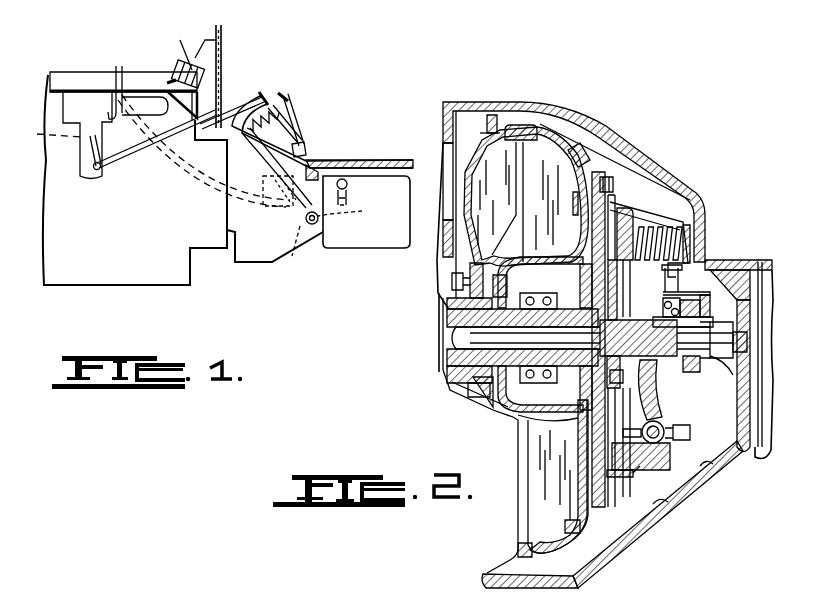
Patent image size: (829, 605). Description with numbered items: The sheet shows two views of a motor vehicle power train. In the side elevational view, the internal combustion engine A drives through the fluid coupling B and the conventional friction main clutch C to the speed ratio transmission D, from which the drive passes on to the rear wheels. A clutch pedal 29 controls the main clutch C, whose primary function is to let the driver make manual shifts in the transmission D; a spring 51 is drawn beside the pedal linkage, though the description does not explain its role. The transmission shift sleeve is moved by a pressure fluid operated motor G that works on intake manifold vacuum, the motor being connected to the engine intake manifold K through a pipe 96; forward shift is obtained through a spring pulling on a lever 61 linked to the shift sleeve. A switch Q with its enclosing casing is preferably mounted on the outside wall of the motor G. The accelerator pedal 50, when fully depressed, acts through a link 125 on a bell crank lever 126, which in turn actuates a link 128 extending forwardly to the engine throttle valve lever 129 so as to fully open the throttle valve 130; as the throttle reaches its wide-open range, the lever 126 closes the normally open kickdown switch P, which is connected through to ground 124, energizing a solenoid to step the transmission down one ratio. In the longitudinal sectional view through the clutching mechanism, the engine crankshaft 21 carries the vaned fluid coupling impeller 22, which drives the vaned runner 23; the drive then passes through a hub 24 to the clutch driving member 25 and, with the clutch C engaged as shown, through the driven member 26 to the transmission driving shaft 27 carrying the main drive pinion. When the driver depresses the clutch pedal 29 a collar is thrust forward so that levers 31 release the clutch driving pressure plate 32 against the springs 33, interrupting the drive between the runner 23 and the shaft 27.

In FIG. 1, the internal combustion engine A is at (57, 73).
In FIG. 1, the engine intake manifold K is at (87, 100).
In FIG. 1, the pipe 96 is at (118, 70).
In FIG. 1, the bell crank lever 126 is at (167, 92).
In FIG. 1, the kickdown switch P is at (197, 87).
In FIG. 1, the ground 124 is at (232, 90).
In FIG. 1, the link 125 is at (233, 117).
In FIG. 1, the clutch pedal 29 is at (284, 95).
In FIG. 1, the spring 51 is at (273, 117).
In FIG. 1, the accelerator pedal 50 is at (290, 136).
In FIG. 2, the accelerator pedal 50 is at (690, 315).
In FIG. 1, the speed ratio transmission D is at (388, 177).
In FIG. 1, the lever 61 is at (353, 201).
In FIG. 1, the switch Q is at (273, 215).
In FIG. 1, the pressure fluid operated motor G is at (299, 250).
In FIG. 1, the throttle valve 130 is at (37, 134).
In FIG. 1, the engine throttle valve lever 129 is at (85, 158).
In FIG. 1, the link 128 is at (127, 150).
In FIG. 2, the fluid coupling B is at (540, 152).
In FIG. 2, the engine crankshaft 21 is at (447, 308).
In FIG. 2, the vaned fluid coupling impeller 22 is at (483, 150).
In FIG. 2, the vaned runner 23 is at (600, 172).
In FIG. 2, the clutch driving member 25 is at (598, 172).
In FIG. 2, the friction main clutch C is at (613, 172).
In FIG. 2, the springs 33 is at (657, 228).
In FIG. 2, the driven member 26 is at (624, 283).
In FIG. 2, the hub 24 is at (599, 340).
In FIG. 2, the transmission driving shaft 27 is at (735, 338).
In FIG. 2, the levers 31 is at (650, 380).
In FIG. 2, the clutch driving pressure plate 32 is at (633, 473).